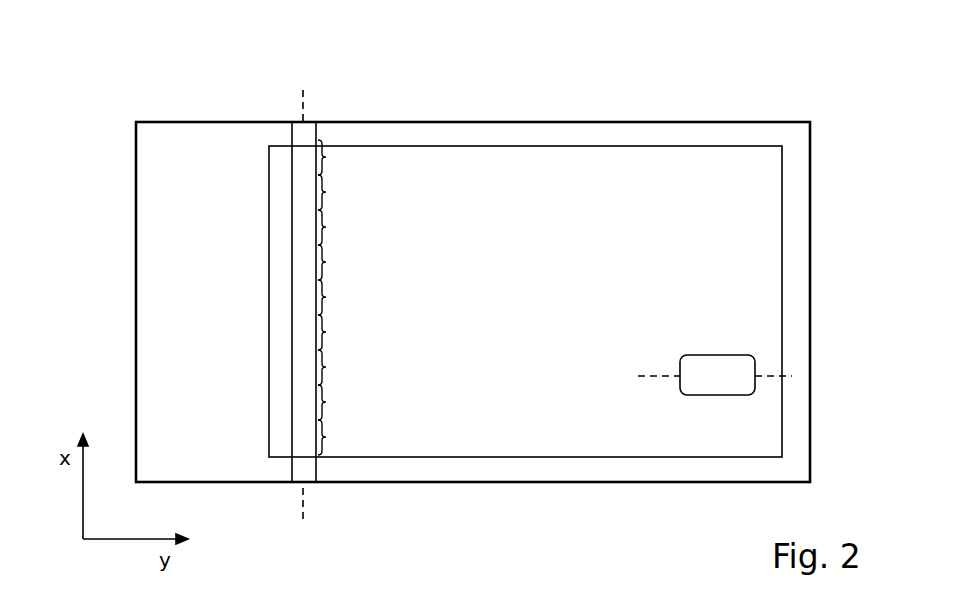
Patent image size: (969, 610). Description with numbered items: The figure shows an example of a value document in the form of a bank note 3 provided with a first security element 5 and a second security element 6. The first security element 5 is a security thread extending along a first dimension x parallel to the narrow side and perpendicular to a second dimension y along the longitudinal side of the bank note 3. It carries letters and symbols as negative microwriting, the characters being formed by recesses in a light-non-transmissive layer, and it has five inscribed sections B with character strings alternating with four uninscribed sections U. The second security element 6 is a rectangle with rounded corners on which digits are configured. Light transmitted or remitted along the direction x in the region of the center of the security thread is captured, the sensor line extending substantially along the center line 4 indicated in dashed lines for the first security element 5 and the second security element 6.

The bank note 3 is at (520, 121).
The center line 4 is at (303, 90).
The first security element 5 is at (318, 122).
The second security element 6 is at (716, 355).